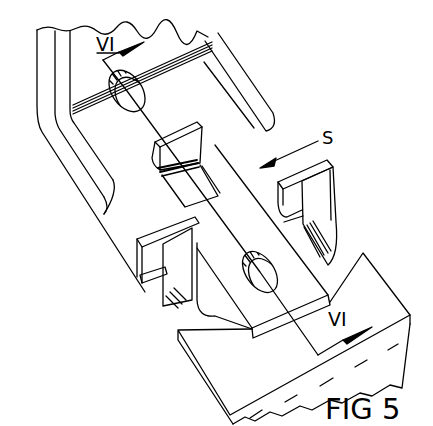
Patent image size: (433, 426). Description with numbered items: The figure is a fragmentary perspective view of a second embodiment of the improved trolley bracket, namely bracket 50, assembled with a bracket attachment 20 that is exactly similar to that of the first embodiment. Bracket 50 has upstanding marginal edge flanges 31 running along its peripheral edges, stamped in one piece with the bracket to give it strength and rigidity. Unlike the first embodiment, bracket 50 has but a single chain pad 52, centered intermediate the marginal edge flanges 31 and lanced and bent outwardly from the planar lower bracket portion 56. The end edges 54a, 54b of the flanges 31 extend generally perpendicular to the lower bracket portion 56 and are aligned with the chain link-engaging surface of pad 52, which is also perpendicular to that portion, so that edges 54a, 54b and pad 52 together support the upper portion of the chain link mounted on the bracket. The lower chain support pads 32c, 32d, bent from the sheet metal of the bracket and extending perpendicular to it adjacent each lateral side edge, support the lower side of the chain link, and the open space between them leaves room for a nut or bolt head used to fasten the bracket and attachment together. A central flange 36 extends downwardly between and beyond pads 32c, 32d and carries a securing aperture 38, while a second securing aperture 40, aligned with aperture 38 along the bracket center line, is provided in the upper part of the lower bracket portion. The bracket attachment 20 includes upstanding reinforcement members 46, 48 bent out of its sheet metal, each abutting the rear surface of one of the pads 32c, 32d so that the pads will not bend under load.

The bracket attachment 20 is at (385, 283).
The marginal edge flange 31 is at (97, 160).
The lower chain support pad 32c is at (140, 272).
The lower chain support pad 32d is at (325, 183).
The central flange 36 is at (253, 327).
The securing aperture 38 is at (253, 252).
The second securing aperture 40 is at (147, 87).
The reinforcement member 46 is at (180, 280).
The reinforcement member 48 is at (335, 207).
The trolley bracket 50 is at (35, 105).
The chain pad 52 is at (170, 133).
The end edge of marginal edge flange 54a is at (270, 128).
The end edge of marginal edge flange 54b is at (107, 220).
The planar lower bracket portion 56 is at (128, 135).